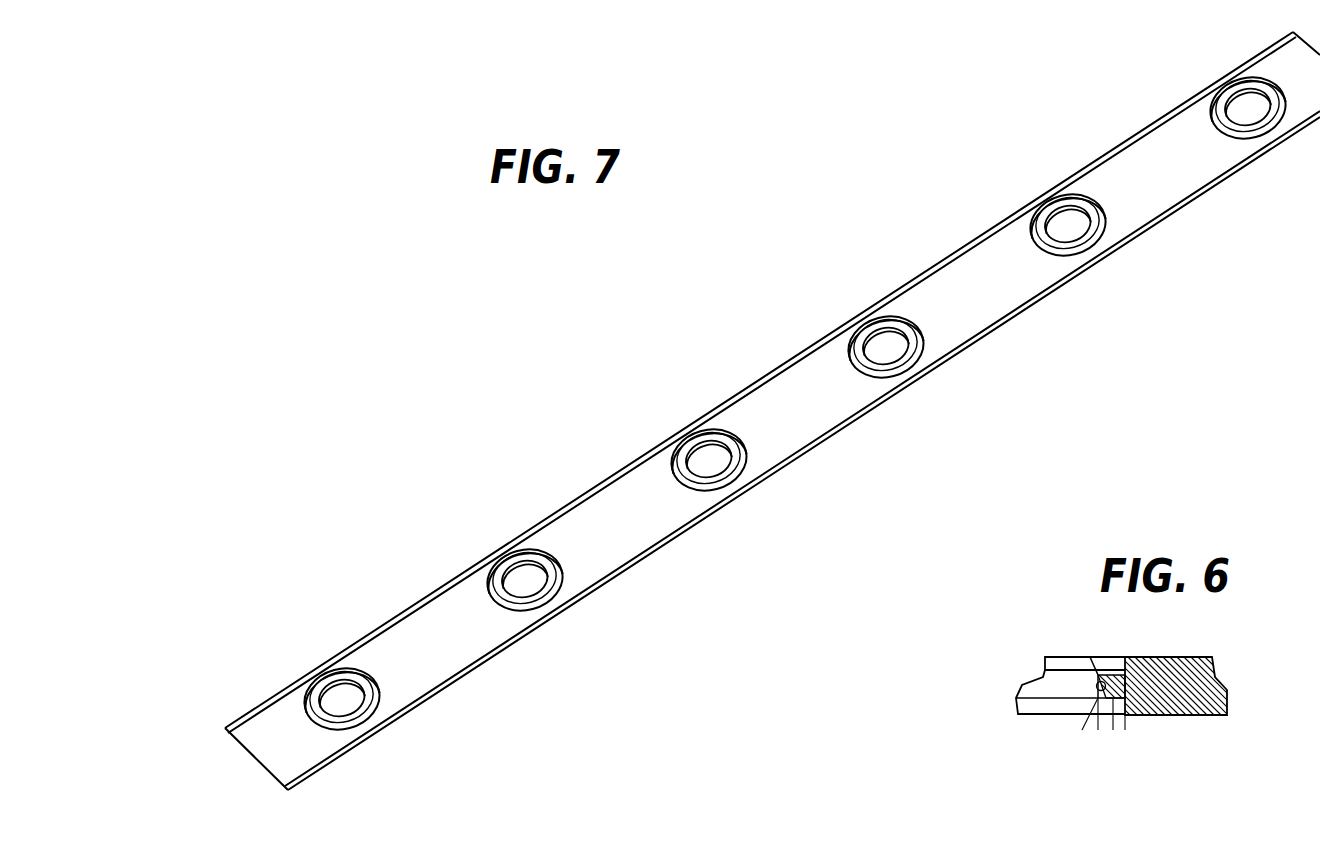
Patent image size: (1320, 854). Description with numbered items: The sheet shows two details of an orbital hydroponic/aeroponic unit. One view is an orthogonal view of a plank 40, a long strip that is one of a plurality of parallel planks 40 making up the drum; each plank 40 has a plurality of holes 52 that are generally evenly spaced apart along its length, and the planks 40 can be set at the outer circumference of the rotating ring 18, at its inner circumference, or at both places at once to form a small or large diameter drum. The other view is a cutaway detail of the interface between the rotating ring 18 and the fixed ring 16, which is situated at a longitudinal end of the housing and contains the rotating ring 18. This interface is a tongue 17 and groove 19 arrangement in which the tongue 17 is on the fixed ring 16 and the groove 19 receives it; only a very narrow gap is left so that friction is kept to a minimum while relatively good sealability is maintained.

In FIG. 7, the plank 40 is at (485, 398).
In FIG. 7, the holes 52 is at (1241, 113).
In FIG. 6, the fixed ring 16 is at (1160, 713).
In FIG. 6, the tongue 17 is at (1110, 713).
In FIG. 6, the rotating ring 18 is at (1060, 708).
In FIG. 6, the groove 19 is at (1055, 683).